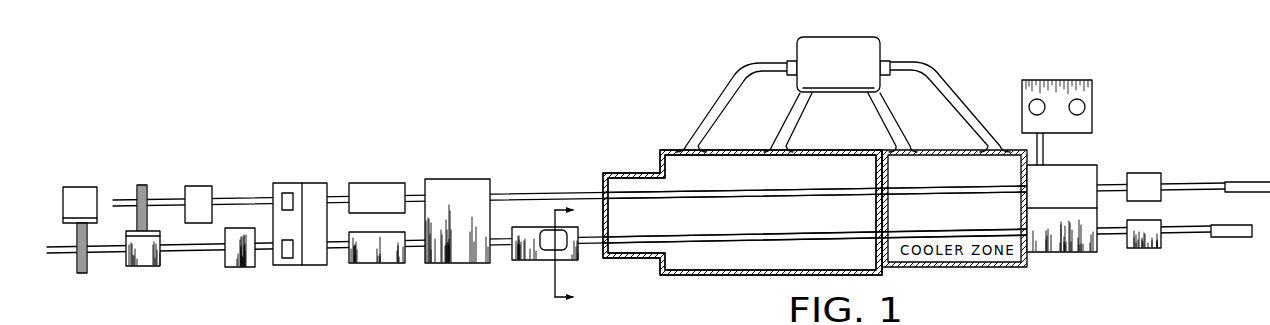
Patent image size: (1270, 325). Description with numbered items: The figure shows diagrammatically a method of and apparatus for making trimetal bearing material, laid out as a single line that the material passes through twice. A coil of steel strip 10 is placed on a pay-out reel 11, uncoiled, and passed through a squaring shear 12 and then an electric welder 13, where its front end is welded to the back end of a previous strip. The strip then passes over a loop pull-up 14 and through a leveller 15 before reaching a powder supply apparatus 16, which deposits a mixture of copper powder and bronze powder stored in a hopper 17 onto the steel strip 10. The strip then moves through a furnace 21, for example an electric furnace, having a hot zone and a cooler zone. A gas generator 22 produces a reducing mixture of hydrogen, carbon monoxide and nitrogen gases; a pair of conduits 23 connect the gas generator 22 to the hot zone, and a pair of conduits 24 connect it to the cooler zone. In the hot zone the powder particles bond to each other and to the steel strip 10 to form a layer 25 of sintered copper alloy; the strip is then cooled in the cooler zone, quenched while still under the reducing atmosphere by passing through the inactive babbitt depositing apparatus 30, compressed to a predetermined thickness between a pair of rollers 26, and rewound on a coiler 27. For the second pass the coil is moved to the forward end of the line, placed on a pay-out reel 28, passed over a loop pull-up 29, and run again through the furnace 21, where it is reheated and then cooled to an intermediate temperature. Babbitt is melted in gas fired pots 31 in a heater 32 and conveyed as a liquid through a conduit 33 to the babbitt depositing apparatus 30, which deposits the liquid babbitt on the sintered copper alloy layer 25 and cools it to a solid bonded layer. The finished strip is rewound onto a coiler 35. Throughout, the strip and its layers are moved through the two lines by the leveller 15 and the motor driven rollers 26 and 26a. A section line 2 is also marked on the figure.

The section line 2- 2 is at (573, 255).
The steel strip 10 is at (117, 253).
The pay-out reel 11 is at (78, 197).
The squaring shear 12 is at (242, 260).
The electric welder 13 is at (310, 258).
The loop pull-up 14 is at (372, 257).
The leveller 15 is at (452, 250).
The powder supply apparatus 16 is at (523, 262).
The hopper 17 is at (548, 238).
The furnace 21 is at (675, 170).
The gas generator 22 is at (835, 48).
The conduits 23 is at (708, 117).
The conduits 24 is at (930, 78).
The layer of sintered copper alloy 25 is at (240, 197).
The rollers 26 is at (1157, 240).
The motor driven rollers 26a is at (1145, 177).
The coiler 27 is at (1231, 234).
The pay-out reel 28 is at (119, 203).
The loop pull-up 29 is at (372, 190).
The babbitt depositing apparatus 30 is at (1095, 161).
The gas fired pots 31 is at (1085, 105).
The heater 32 is at (1075, 94).
The conduit 33 is at (1043, 148).
The coiler 35 is at (1253, 185).